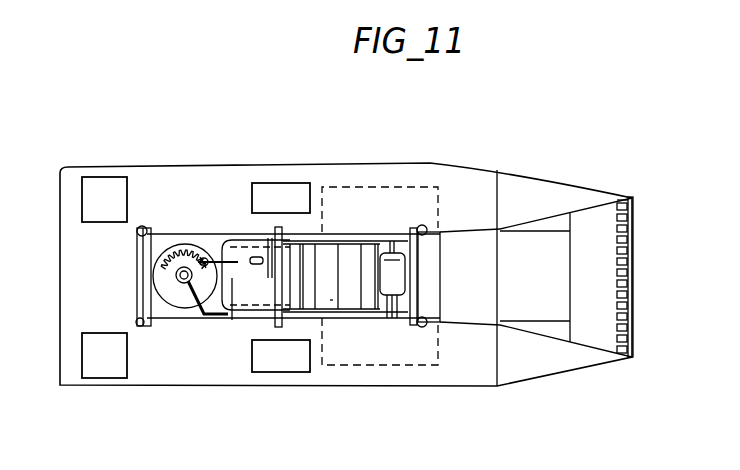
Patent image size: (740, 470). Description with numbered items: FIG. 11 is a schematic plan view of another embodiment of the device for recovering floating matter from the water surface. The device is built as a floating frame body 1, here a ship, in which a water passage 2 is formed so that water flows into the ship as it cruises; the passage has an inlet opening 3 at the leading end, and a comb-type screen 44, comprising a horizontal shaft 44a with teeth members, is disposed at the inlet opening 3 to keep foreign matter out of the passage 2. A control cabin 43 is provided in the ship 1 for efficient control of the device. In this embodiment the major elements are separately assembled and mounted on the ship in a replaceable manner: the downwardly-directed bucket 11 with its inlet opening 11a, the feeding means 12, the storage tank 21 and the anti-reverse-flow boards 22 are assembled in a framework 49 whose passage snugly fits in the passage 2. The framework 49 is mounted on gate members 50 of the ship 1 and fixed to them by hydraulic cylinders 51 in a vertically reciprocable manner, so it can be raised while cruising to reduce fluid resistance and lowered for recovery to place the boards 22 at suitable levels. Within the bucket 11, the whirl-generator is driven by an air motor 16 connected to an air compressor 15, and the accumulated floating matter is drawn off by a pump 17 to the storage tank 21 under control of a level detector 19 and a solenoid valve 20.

The floating frame body 1 is at (204, 166).
The water passage 2 is at (470, 238).
The inlet opening 3 is at (604, 301).
The downwardly-directed bucket 11 is at (178, 302).
The inlet opening 11a is at (187, 237).
The feeding means 12 is at (308, 274).
The air compressor 15 is at (400, 280).
The air motor 16 is at (176, 272).
The pump 17 is at (402, 265).
The level detector 19 is at (175, 278).
The solenoid valve 20 is at (208, 258).
The storage tank 21 is at (252, 308).
The anti-reverse-flow boards 22 is at (363, 298).
The control cabin 43 is at (528, 247).
The screen 44 is at (625, 252).
The horizontal shaft 44a is at (622, 206).
The framework 49 is at (194, 318).
The gate members 50 is at (269, 238).
The hydraulic cylinders 51 is at (142, 226).